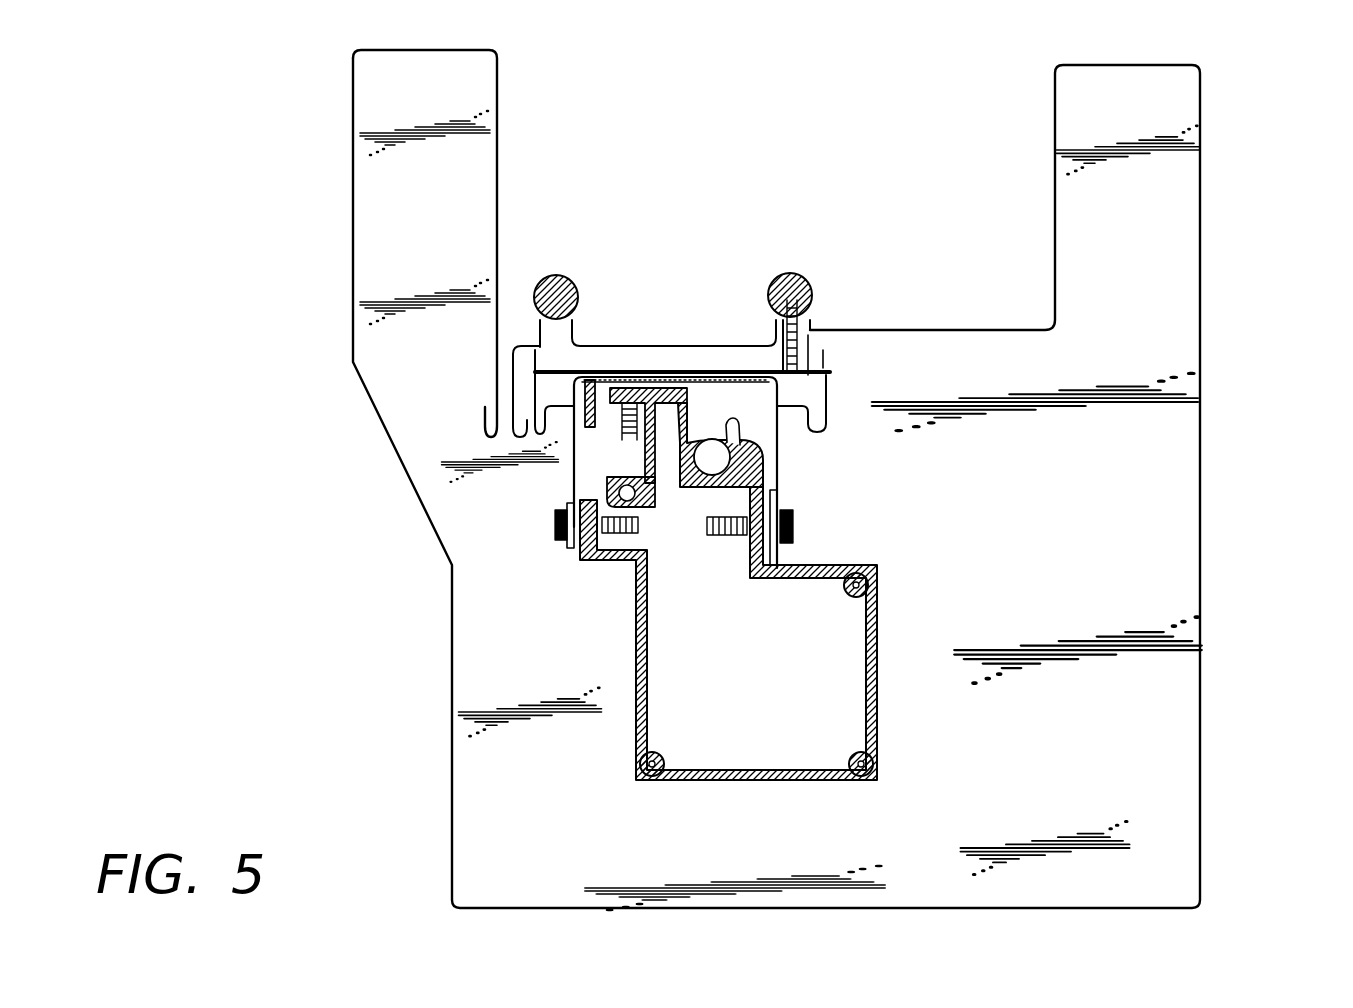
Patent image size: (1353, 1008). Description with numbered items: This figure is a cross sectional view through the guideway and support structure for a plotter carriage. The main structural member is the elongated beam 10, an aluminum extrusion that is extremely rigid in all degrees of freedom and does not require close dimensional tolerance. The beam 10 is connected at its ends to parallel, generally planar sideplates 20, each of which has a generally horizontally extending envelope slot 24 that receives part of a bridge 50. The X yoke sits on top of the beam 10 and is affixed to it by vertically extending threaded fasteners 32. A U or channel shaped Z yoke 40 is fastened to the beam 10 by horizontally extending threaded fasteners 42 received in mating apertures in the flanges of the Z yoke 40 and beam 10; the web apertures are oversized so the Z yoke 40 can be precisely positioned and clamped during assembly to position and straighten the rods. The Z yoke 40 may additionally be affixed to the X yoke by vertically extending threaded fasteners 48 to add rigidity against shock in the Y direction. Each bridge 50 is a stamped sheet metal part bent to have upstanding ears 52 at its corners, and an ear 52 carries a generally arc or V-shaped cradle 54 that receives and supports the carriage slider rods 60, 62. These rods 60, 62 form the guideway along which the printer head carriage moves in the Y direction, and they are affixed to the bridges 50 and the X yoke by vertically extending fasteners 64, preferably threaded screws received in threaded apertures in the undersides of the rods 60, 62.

The elongated beam 10 is at (1233, 183).
The sideplate 20 is at (1068, 524).
The envelope slot 24 is at (540, 418).
The vertically extending threaded fastener 32 is at (625, 440).
The Z yoke 40 is at (783, 455).
The horizontally extending threaded fastener 42 is at (797, 527).
The vertically extending threaded fastener 48 is at (708, 390).
The bridge 50 is at (656, 345).
The upstanding ear 52 is at (586, 338).
The cradle 54 is at (808, 300).
The carriage slider rod 60 is at (787, 273).
The carriage slider rod 62 is at (553, 276).
The vertically extending fastener 64 is at (823, 388).